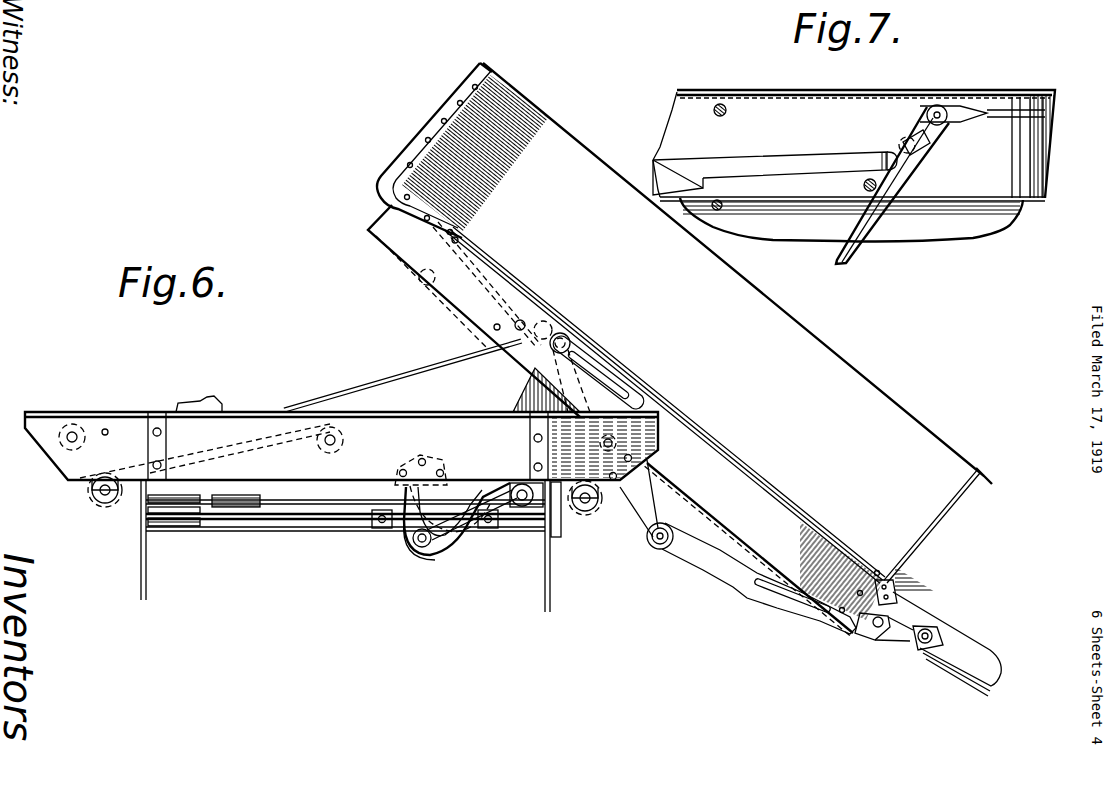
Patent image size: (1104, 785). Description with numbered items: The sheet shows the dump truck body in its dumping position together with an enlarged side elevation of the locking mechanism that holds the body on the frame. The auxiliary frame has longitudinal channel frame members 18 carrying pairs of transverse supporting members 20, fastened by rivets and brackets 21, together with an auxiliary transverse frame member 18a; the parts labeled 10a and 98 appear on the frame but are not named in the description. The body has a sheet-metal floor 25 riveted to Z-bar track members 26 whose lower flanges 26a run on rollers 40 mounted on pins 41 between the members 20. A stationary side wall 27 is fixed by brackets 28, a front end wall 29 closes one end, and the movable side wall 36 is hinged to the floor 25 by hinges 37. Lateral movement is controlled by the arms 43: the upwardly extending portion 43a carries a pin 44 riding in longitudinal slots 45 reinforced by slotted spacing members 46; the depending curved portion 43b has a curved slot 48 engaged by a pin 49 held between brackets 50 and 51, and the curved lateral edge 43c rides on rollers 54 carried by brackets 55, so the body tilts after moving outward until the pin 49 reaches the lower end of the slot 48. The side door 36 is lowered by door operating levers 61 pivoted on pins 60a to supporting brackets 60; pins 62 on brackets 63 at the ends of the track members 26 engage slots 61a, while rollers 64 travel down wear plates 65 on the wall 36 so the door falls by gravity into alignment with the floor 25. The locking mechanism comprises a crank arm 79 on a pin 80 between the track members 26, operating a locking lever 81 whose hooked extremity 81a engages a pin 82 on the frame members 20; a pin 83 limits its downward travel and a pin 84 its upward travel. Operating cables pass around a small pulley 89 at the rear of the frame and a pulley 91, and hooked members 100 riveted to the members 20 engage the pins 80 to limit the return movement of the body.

In FIG. 6, the frame post 10a is at (140, 582).
In FIG. 6, the longitudinal frame members 18 is at (147, 513).
In FIG. 6, the auxiliary transverse frame member 18a is at (308, 521).
In FIG. 6, the transverse supporting members 20 is at (55, 441).
In FIG. 7, the transverse supporting members 20 is at (976, 230).
In FIG. 6, the brackets 21 is at (158, 410).
In FIG. 6, the floor 25 is at (505, 270).
In FIG. 7, the floor 25 is at (720, 93).
In FIG. 6, the transverse track members 26 is at (385, 222).
In FIG. 7, the transverse track members 26 is at (677, 104).
In FIG. 6, the lower horizontal flanges 26a is at (418, 278).
In FIG. 7, the lower horizontal flanges 26a is at (1035, 202).
In FIG. 6, the stationary side wall 27 is at (468, 103).
In FIG. 6, the brackets 28 is at (420, 130).
In FIG. 6, the front end wall 29 is at (813, 356).
In FIG. 6, the side wall 36 is at (963, 643).
In FIG. 6, the hinges 37 is at (900, 588).
In FIG. 6, the rollers 40 is at (75, 430).
In FIG. 6, the pins 41 is at (57, 480).
In FIG. 6, the controlling arms 43 is at (390, 562).
In FIG. 6, the upwardly extending portion 43a is at (528, 376).
In FIG. 6, the depending curved portion 43b is at (417, 545).
In FIG. 6, the curved lateral edge 43c is at (507, 513).
In FIG. 6, the pin 44 is at (571, 343).
In FIG. 6, the longitudinal slots 45 is at (628, 378).
In FIG. 6, the slotted spacing members 46 is at (612, 356).
In FIG. 6, the curved slot 48 is at (455, 500).
In FIG. 6, the pin 49 is at (425, 545).
In FIG. 6, the bracket 50 is at (395, 486).
In FIG. 6, the bracket 51 is at (380, 540).
In FIG. 6, the rollers 54 is at (517, 488).
In FIG. 6, the brackets 55 is at (546, 533).
In FIG. 6, the supporting brackets 60 is at (643, 513).
In FIG. 6, the pins 60a is at (660, 552).
In FIG. 6, the door operating levers 61 is at (731, 580).
In FIG. 6, the slots 61a is at (790, 595).
In FIG. 6, the pins 62 is at (879, 628).
In FIG. 6, the brackets 63 is at (860, 633).
In FIG. 6, the rollers 64 is at (925, 644).
In FIG. 6, the wear plates 65 is at (975, 663).
In FIG. 7, the crank arm 79 is at (920, 107).
In FIG. 6, the pin 80 is at (535, 312).
In FIG. 7, the pin 80 is at (900, 147).
In FIG. 7, the locking lever 81 is at (777, 160).
In FIG. 7, the hooked extremity 81a is at (700, 173).
In FIG. 6, the pin 82 is at (88, 488).
In FIG. 7, the pin 82 is at (718, 210).
In FIG. 6, the pin 83 is at (490, 330).
In FIG. 7, the pin 83 is at (862, 184).
In FIG. 6, the pin 84 is at (452, 241).
In FIG. 7, the pin 84 is at (713, 103).
In FIG. 6, the small pulley 89 is at (175, 481).
In FIG. 6, the pulley 91 is at (248, 507).
In FIG. 6, the plate 98 is at (207, 506).
In FIG. 6, the hooked members 100 is at (205, 400).